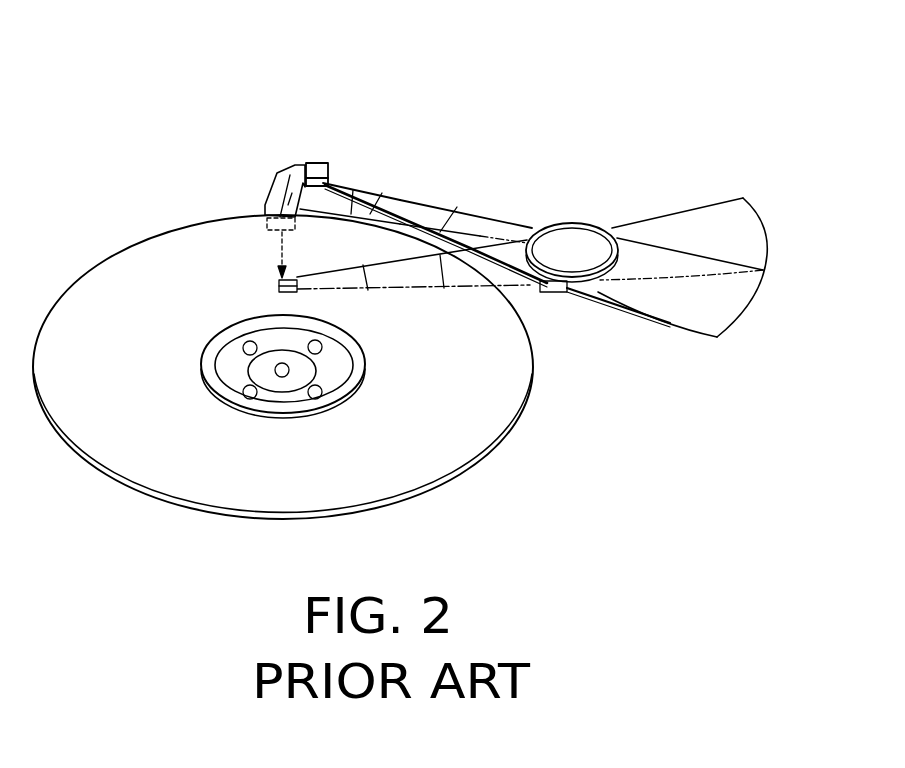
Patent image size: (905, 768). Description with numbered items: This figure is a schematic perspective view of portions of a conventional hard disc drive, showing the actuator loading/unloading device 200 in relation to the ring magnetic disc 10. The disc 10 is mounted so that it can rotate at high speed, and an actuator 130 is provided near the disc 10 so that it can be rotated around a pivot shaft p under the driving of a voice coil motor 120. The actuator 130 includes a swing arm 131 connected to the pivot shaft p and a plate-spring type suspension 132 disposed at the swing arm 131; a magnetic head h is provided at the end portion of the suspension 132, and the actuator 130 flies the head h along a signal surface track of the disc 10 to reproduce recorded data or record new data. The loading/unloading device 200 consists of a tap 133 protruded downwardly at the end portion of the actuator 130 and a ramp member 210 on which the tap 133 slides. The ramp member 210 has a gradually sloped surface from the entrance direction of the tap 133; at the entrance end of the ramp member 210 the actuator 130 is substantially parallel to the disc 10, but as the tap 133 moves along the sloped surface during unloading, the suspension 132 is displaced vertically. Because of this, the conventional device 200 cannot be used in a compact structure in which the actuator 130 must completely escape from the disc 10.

The magnetic disc 10 is at (467, 422).
The voice coil motor 120 is at (717, 310).
The actuator 130 is at (676, 184).
The swing arm 131 is at (470, 220).
The suspension 132 is at (352, 187).
The tap 133 is at (305, 167).
The actuator loading/unloading device 200 is at (313, 118).
The ramp member 210 is at (272, 197).
The magnetic head h is at (324, 163).
The pivot shaft p is at (567, 242).